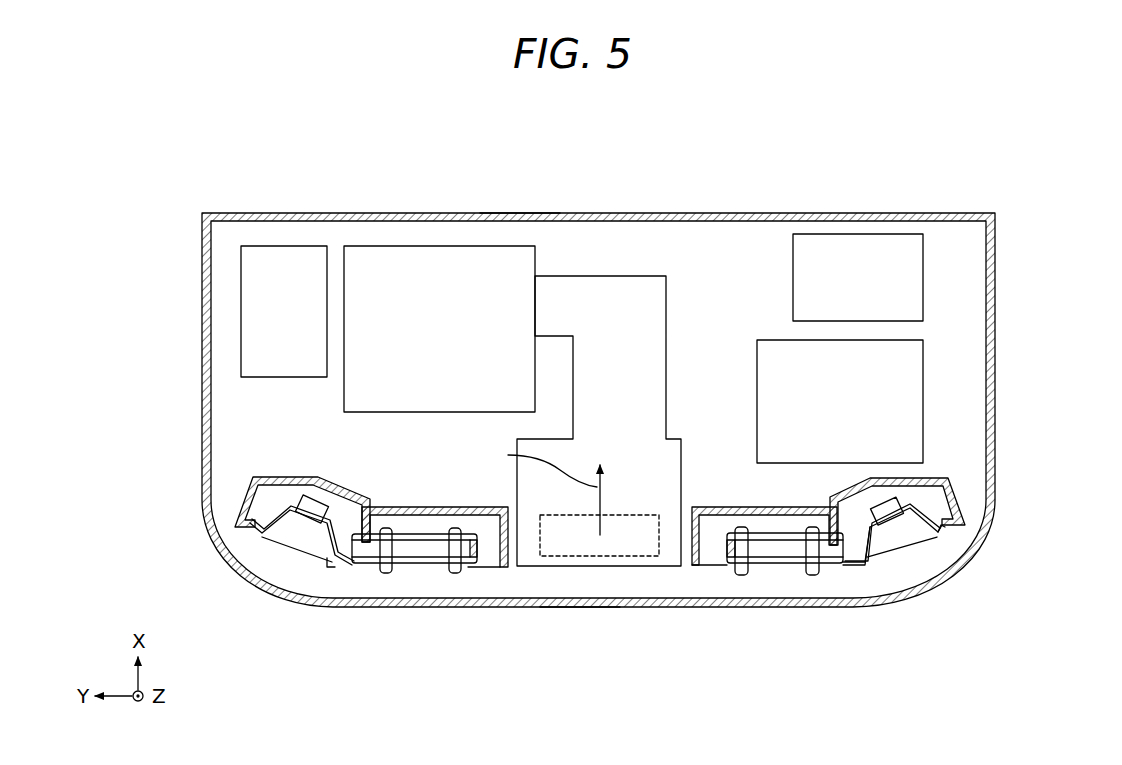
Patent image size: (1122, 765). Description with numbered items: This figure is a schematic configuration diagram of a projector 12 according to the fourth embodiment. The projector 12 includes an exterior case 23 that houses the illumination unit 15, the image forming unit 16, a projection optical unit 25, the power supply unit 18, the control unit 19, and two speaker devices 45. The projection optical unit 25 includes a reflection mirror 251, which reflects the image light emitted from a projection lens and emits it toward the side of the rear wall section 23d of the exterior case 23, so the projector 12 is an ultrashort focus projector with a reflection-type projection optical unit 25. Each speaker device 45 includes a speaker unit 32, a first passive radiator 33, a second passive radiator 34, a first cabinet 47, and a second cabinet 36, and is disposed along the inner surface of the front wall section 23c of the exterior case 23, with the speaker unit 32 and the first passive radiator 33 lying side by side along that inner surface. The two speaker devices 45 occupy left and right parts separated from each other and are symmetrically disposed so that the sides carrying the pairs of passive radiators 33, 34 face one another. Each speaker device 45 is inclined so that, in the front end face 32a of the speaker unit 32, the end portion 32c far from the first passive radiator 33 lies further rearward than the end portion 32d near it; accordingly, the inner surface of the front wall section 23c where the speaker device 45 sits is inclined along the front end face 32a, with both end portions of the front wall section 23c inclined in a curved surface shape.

The projector 12 is at (568, 180).
The illumination unit 15 is at (290, 245).
The image forming unit 16 is at (410, 245).
The power supply unit 18 is at (915, 380).
The control unit 19 is at (860, 245).
The exterior case 23 is at (710, 210).
The front wall section 23c is at (577, 607).
The rear wall section 23d is at (513, 213).
The projection optical unit 25 is at (624, 288).
The reflection mirror 251 is at (635, 556).
The speaker unit 32 is at (297, 540).
The front end face 32a is at (887, 557).
The end portion 32c is at (960, 545).
The end portion 32d is at (863, 563).
The first passive radiator 33 is at (408, 562).
The second passive radiator 34 is at (438, 537).
The second cabinet 36 is at (415, 507).
The speaker device 45 is at (232, 497).
The first cabinet 47 is at (282, 477).